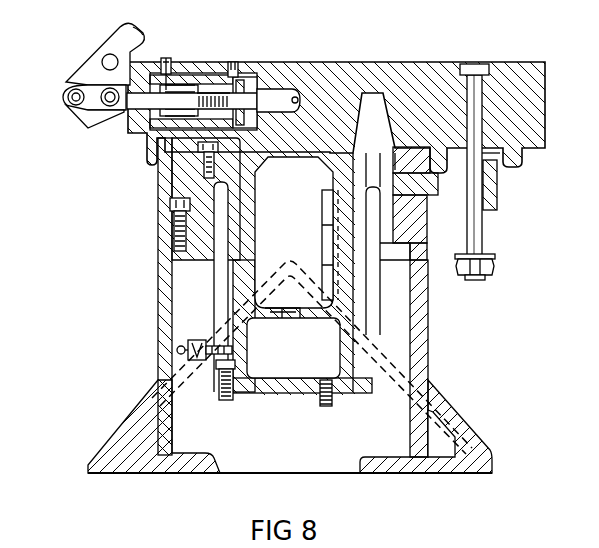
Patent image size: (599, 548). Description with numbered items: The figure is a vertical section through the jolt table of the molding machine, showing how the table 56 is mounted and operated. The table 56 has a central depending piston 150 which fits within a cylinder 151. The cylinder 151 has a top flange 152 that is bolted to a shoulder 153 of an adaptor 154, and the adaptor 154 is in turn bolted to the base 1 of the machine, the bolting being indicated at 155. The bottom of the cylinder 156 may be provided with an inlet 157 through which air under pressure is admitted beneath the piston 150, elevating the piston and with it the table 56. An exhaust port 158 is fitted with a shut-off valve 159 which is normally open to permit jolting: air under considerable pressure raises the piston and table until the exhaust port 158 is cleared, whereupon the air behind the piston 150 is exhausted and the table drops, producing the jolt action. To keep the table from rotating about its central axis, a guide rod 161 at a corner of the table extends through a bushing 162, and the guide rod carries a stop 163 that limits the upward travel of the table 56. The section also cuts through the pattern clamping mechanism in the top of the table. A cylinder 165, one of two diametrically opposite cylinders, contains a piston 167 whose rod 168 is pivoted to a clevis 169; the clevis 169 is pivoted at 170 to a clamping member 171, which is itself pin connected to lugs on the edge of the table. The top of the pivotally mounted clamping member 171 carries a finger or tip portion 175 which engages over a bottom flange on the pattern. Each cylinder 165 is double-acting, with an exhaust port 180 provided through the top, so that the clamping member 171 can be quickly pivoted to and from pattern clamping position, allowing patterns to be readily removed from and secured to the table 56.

The base 1 is at (453, 418).
The table 56 is at (537, 78).
The piston 150 is at (257, 253).
The cylinder 151 is at (227, 287).
The top flange 152 is at (165, 168).
The shoulder 153 is at (183, 181).
The adaptor 154 is at (416, 228).
The bolt 155 is at (170, 225).
The bottom of the cylinder 156 is at (246, 394).
The inlet 157 is at (331, 404).
The exhaust port 158 is at (210, 364).
The shut-off valve 159 is at (196, 340).
The guide rod 161 is at (478, 231).
The bushing 162 is at (496, 184).
The stop 163 is at (487, 270).
The cylinder 165 is at (190, 70).
The piston 167 is at (236, 73).
The rod 168 is at (117, 122).
The clevis 169 is at (91, 74).
The pivot 170 is at (64, 98).
The clamping member 171 is at (110, 50).
The finger or tip portion 175 is at (138, 36).
The exhaust port 180 is at (233, 61).